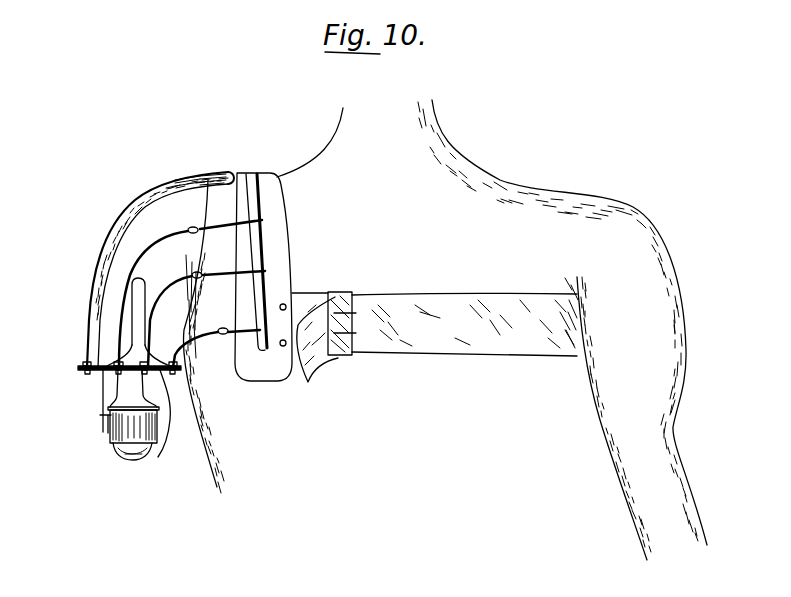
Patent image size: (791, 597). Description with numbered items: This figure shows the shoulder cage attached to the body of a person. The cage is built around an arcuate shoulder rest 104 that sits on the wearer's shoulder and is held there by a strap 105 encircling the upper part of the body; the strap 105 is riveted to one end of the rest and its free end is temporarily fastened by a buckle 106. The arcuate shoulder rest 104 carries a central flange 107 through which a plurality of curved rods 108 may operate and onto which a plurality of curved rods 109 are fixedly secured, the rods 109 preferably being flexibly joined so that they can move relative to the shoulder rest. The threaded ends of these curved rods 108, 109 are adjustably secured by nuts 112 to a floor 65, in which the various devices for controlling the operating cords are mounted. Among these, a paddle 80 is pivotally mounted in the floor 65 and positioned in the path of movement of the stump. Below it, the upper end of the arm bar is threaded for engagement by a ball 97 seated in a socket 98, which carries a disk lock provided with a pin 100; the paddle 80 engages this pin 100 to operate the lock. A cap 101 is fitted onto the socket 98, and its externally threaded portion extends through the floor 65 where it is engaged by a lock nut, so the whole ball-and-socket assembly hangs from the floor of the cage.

The curved rods 108 is at (167, 184).
The curved rods 109 is at (210, 225).
The central flange 107 is at (272, 233).
The arcuate shoulder rest 104 is at (285, 257).
The buckle 106 is at (340, 291).
The strap 105 is at (464, 324).
The nuts 112 is at (80, 366).
The paddle 80 is at (102, 388).
The cap 101 is at (102, 416).
The pin 100 is at (108, 424).
The socket 98 is at (112, 440).
The ball 97 is at (130, 446).
The floor 65 is at (172, 418).